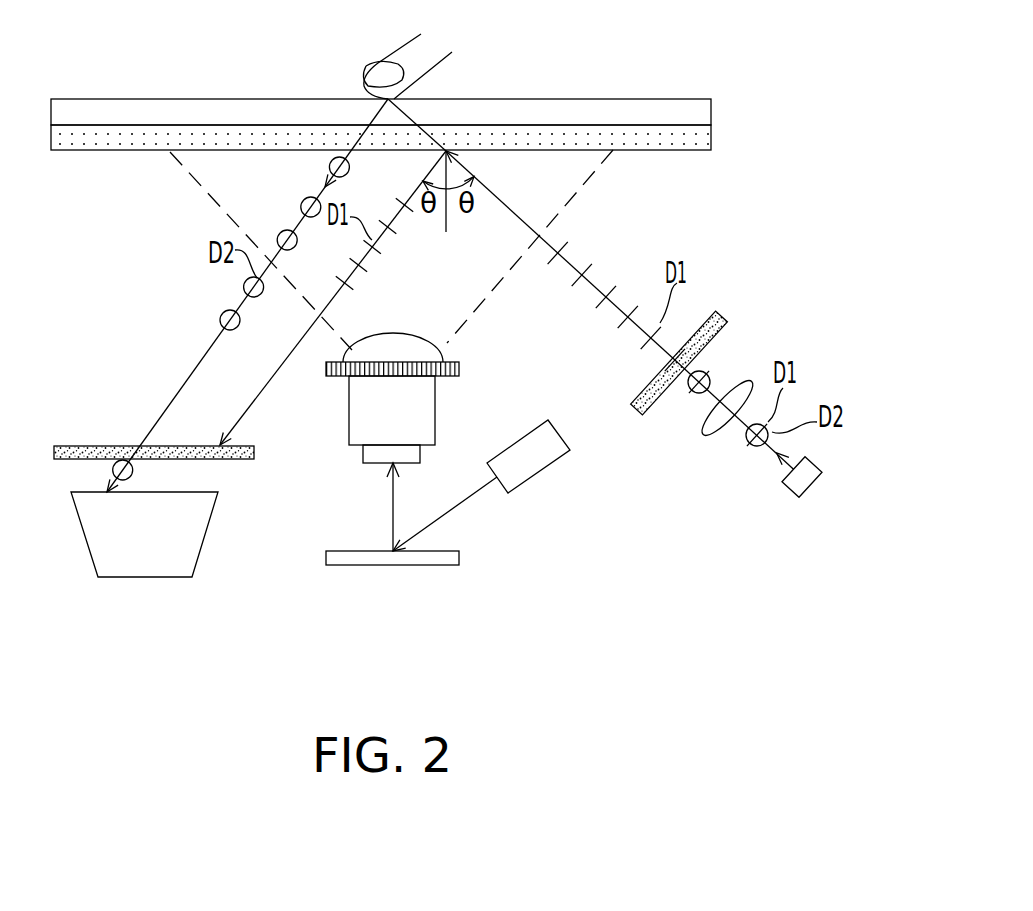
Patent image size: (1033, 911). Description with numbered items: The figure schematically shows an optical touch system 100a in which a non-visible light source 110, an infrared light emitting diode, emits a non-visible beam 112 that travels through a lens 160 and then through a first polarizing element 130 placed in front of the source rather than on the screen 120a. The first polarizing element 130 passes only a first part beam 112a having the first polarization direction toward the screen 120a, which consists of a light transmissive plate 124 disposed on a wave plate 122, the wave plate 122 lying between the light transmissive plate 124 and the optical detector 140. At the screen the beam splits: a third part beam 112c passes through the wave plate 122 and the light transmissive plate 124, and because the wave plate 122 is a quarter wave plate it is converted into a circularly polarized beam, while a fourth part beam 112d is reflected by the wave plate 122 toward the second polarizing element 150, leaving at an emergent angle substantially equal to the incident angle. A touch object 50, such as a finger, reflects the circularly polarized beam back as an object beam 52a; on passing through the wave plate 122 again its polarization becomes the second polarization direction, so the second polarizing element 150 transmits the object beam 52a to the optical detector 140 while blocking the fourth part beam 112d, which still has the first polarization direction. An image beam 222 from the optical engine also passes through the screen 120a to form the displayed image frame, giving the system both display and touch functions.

The optical touch system 100a is at (751, 654).
The non-visible light source 110 is at (790, 497).
The non-visible beam 112 is at (700, 400).
The first part beam 112a is at (663, 354).
The third part beam 112c is at (411, 120).
The fourth part beam 112d is at (290, 350).
The screen 120a is at (442, 115).
The wave plate 122 is at (708, 142).
The light transmissive plate 124 is at (708, 112).
The first polarizing element 130 is at (717, 317).
The optical detector 140 is at (142, 563).
The second polarizing element 150 is at (75, 448).
The lens 160 is at (748, 383).
The image beam 222 is at (588, 184).
The touch object 50 is at (377, 66).
The object beam 52a is at (298, 222).